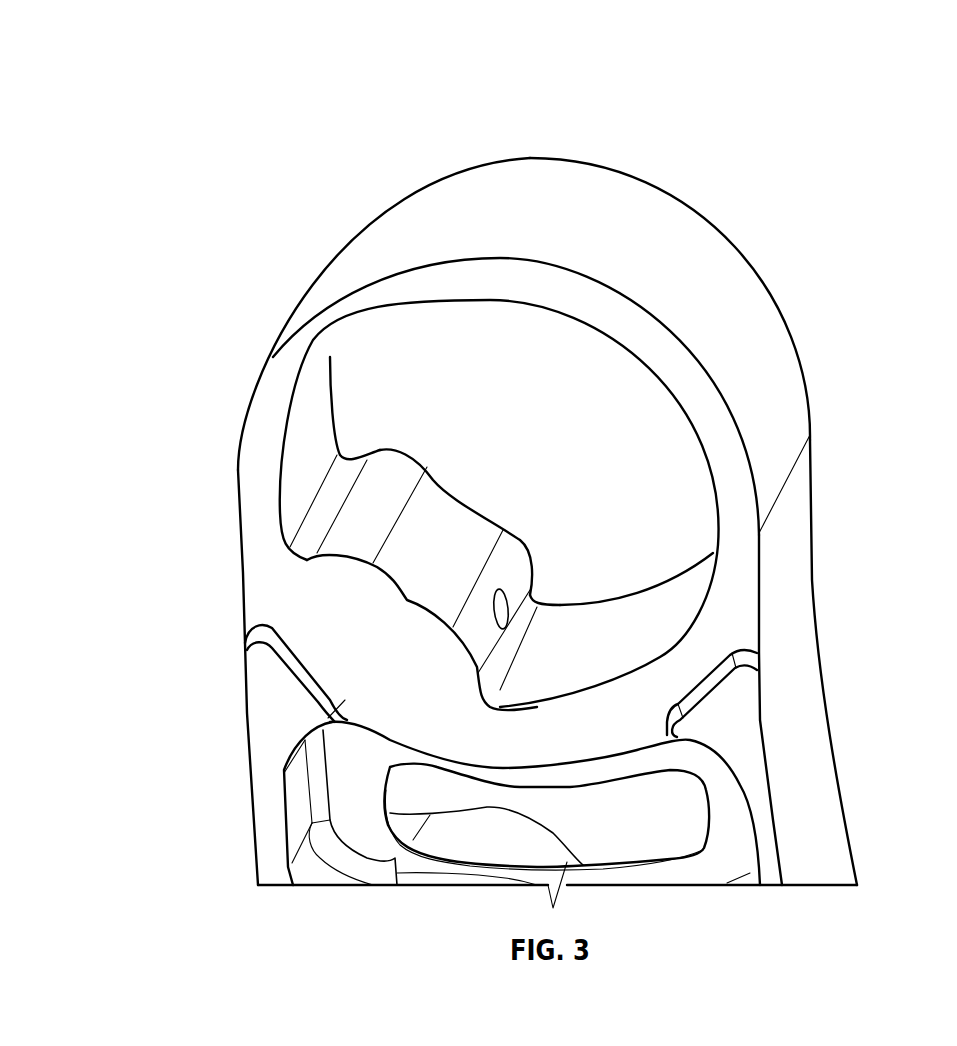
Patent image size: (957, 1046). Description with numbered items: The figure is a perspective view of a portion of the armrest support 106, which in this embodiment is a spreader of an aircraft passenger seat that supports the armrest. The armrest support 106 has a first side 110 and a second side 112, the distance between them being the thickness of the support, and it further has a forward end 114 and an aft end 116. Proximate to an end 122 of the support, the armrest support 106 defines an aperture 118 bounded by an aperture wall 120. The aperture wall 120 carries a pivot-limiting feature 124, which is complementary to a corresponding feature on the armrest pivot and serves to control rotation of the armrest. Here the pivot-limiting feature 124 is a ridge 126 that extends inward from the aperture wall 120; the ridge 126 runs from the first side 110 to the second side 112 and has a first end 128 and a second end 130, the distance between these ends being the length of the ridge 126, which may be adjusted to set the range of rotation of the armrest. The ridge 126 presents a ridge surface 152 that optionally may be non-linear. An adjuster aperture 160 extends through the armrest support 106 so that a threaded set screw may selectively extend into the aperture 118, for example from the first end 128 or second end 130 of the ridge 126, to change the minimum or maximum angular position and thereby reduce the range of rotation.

The armrest support 106 is at (289, 172).
The first side 110 is at (365, 318).
The second side 112 is at (742, 255).
The forward end 114 is at (800, 613).
The aft end 116 is at (247, 576).
The aperture 118 is at (557, 412).
The aperture wall 120 is at (662, 617).
The end 122 is at (537, 190).
The pivot-limiting feature 124 is at (423, 523).
The ridge 126 is at (447, 560).
The first end 128 is at (517, 590).
The second end 130 is at (337, 487).
The ridge surface 152 is at (420, 588).
The adjuster aperture 160 is at (500, 617).